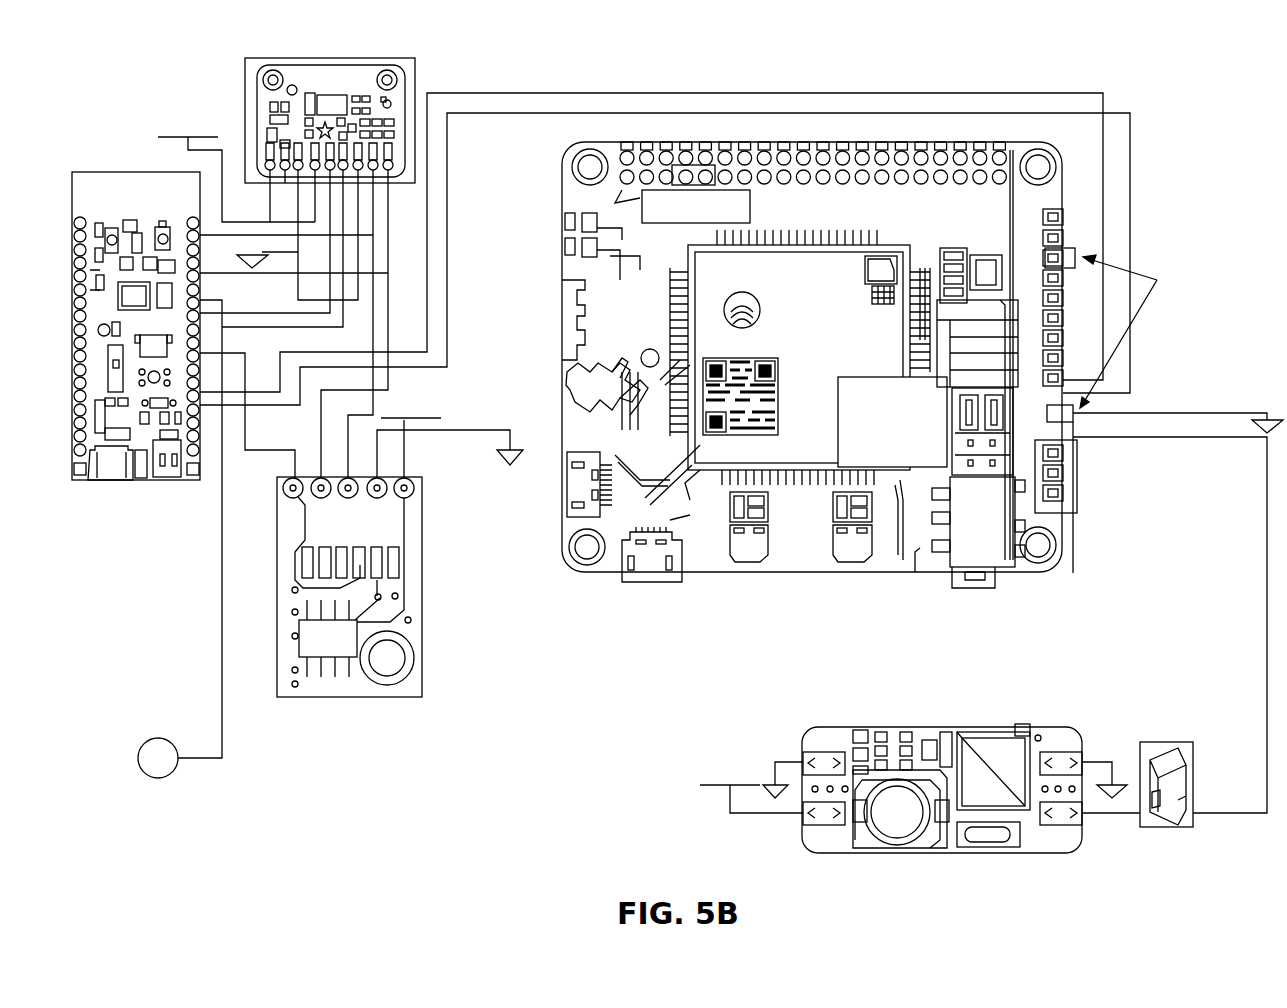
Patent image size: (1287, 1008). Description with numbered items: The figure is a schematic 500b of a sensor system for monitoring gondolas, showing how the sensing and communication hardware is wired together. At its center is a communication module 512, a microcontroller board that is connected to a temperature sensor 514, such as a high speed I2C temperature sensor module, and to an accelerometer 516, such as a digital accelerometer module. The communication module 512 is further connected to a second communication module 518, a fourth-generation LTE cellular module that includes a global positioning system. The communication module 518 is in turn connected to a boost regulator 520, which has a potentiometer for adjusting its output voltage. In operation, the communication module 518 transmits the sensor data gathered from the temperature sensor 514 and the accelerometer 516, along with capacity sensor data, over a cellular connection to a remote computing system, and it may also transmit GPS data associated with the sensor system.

The schematic 500b is at (150, 52).
The communication module 512 is at (158, 169).
The temperature sensor 514 is at (371, 764).
The accelerometer 516 is at (351, 31).
The communication module 518 is at (835, 645).
The boost regulator 520 is at (963, 913).